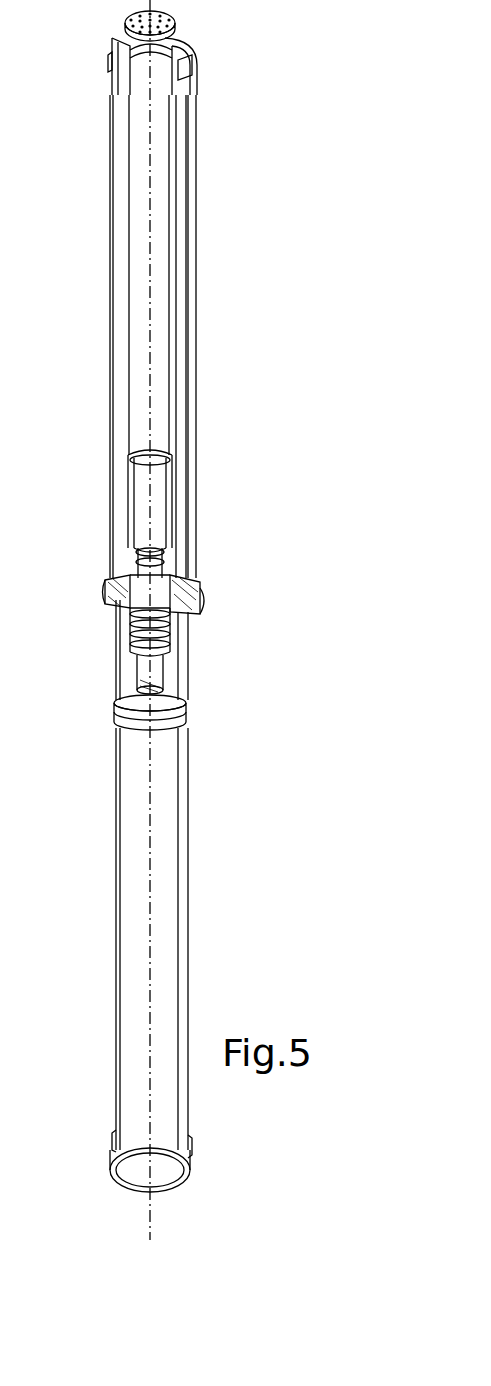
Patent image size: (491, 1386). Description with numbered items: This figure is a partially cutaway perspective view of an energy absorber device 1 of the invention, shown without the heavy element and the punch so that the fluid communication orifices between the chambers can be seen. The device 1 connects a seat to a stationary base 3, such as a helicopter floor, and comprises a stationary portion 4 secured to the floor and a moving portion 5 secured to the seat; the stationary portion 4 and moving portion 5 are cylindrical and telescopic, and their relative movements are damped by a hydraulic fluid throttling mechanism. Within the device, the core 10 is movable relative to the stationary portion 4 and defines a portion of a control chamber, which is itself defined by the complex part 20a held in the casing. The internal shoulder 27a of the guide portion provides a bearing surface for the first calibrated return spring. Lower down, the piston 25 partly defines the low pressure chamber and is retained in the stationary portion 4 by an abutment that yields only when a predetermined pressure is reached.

The energy absorber device 1 is at (90, 1103).
The stationary base 3 is at (94, 645).
The stationary portion 4 is at (188, 813).
The moving portion 5 is at (193, 222).
The core 10 is at (107, 582).
The complex part 20a is at (120, 690).
The piston 25 is at (130, 737).
The internal shoulder 27a is at (134, 432).